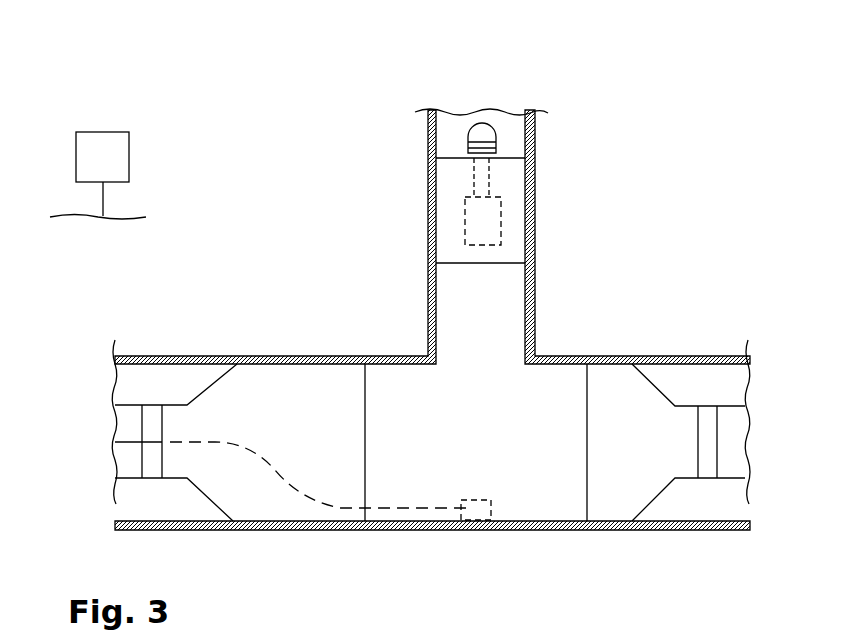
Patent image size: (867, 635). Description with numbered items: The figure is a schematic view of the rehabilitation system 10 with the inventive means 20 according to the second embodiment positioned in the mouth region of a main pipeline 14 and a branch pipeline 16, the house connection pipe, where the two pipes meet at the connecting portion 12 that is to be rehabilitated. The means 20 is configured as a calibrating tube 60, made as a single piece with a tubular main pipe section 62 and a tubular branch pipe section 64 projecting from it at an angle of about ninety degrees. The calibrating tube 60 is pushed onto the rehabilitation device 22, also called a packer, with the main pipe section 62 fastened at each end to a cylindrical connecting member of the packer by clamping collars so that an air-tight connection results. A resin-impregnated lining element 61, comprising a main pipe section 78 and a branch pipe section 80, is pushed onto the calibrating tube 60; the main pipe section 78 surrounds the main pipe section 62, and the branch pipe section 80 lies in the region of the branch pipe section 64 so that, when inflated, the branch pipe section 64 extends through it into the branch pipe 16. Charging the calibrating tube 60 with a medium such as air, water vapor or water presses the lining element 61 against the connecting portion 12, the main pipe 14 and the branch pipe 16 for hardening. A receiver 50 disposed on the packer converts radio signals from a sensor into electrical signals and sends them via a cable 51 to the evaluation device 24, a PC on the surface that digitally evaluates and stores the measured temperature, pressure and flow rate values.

The rehabilitation system 10 is at (320, 102).
The connecting portion 12 is at (545, 340).
The main pipeline 14 is at (660, 356).
The branch pipeline 16 is at (535, 218).
The means 20 is at (211, 515).
The rehabilitation device 22 is at (203, 372).
The evaluation device 24 is at (120, 160).
The receiver 50 is at (470, 505).
The cable 51 is at (292, 487).
The calibrating tube 60 is at (322, 385).
The lining element 61 is at (555, 505).
The main pipe section 62 is at (623, 490).
The branch pipe section 64 is at (512, 186).
The main pipe section 78 is at (525, 503).
The branch pipe section 80 is at (448, 300).